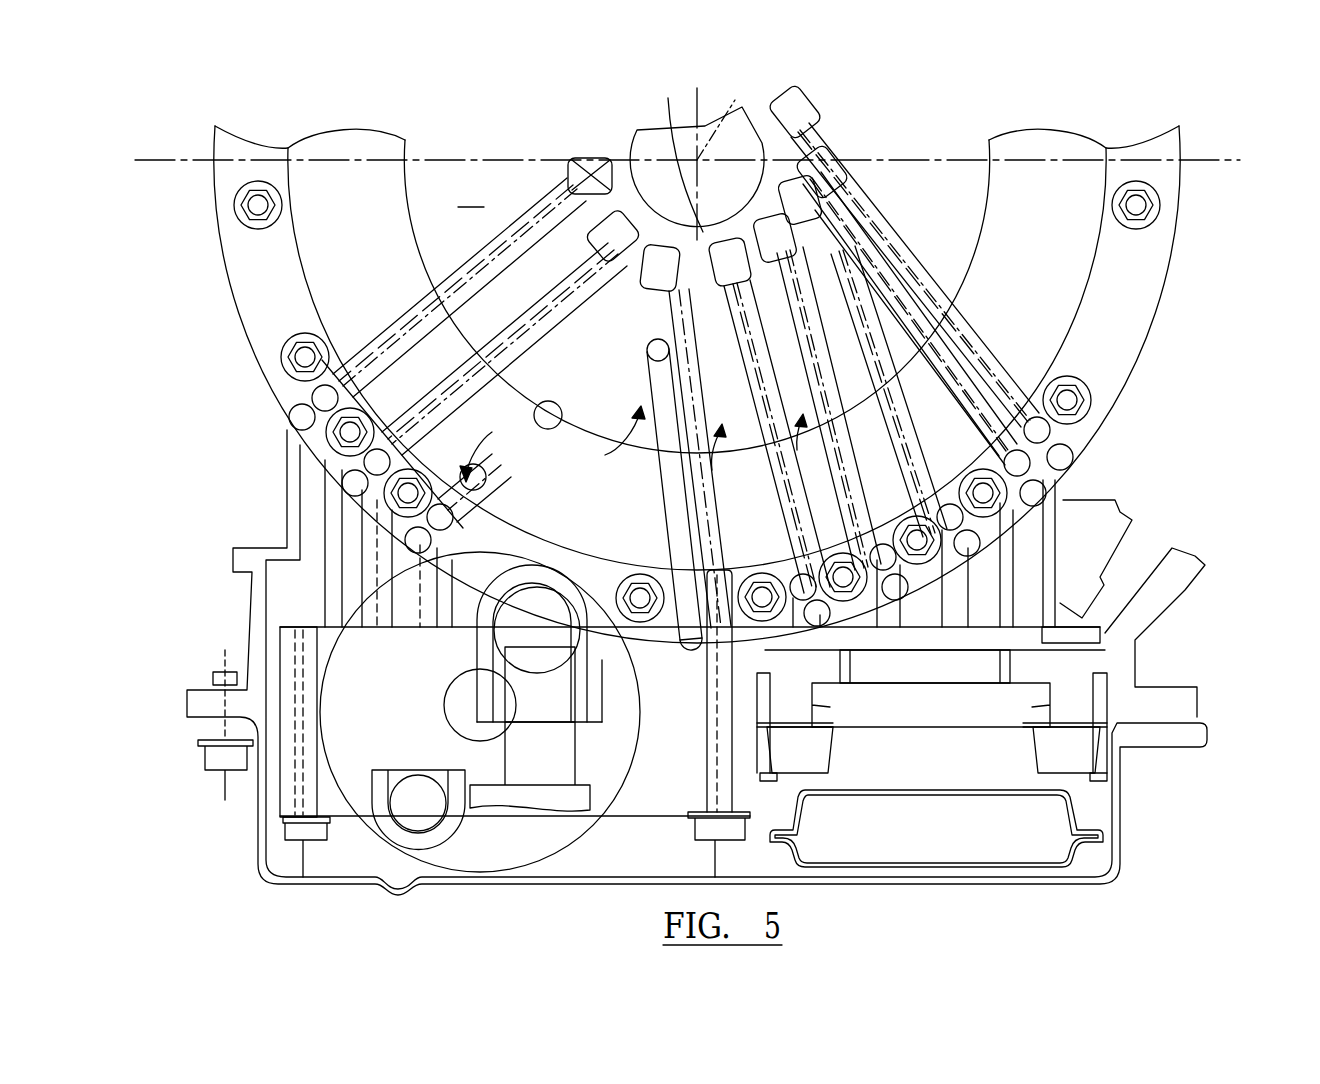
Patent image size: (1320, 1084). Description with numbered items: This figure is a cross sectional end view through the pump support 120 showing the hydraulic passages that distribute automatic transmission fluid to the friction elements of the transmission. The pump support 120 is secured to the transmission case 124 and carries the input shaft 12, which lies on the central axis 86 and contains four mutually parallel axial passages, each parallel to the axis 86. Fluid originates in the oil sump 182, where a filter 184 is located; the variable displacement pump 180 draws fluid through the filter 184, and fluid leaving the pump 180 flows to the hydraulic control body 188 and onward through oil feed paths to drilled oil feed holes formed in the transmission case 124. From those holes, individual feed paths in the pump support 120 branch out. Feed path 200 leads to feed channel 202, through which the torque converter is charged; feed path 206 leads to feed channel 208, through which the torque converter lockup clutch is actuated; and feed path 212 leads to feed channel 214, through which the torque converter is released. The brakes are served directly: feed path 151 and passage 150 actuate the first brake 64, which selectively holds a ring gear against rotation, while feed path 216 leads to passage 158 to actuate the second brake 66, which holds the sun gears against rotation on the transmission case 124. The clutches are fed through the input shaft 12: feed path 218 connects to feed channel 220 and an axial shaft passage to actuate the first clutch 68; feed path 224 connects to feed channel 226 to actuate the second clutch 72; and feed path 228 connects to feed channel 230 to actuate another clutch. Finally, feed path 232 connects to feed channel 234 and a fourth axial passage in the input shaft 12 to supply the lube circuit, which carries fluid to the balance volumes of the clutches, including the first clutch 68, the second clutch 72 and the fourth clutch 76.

The input shaft 12 is at (470, 193).
The first brake 64 is at (484, 442).
The second brake 66 is at (589, 437).
The first clutch 68 is at (760, 436).
The second clutch 72 is at (345, 505).
The fourth clutch 76 is at (829, 408).
The axis 86 is at (720, 116).
The pump support 120 is at (255, 277).
The transmission case 124 is at (255, 593).
The passage 150 is at (470, 483).
The feed path 151 is at (330, 648).
The passage 158 is at (652, 393).
The variable displacement pump 180 is at (628, 820).
The oil sump 182 is at (560, 868).
The filter 184 is at (955, 868).
The hydraulic control body 188 is at (1073, 748).
The feed path 200 is at (1037, 443).
The feed channel 202 is at (850, 215).
The feed path 206 is at (987, 377).
The feed channel 208 is at (818, 162).
The feed path 212 is at (905, 263).
The feed channel 214 is at (808, 108).
The feed path 216 is at (660, 495).
The feed path 218 is at (668, 325).
The feed channel 220 is at (662, 283).
The feed path 224 is at (497, 350).
The feed channel 226 is at (637, 197).
The feed path 228 is at (843, 497).
The feed channel 230 is at (713, 230).
The feed path 232 is at (400, 323).
The feed channel 234 is at (580, 160).